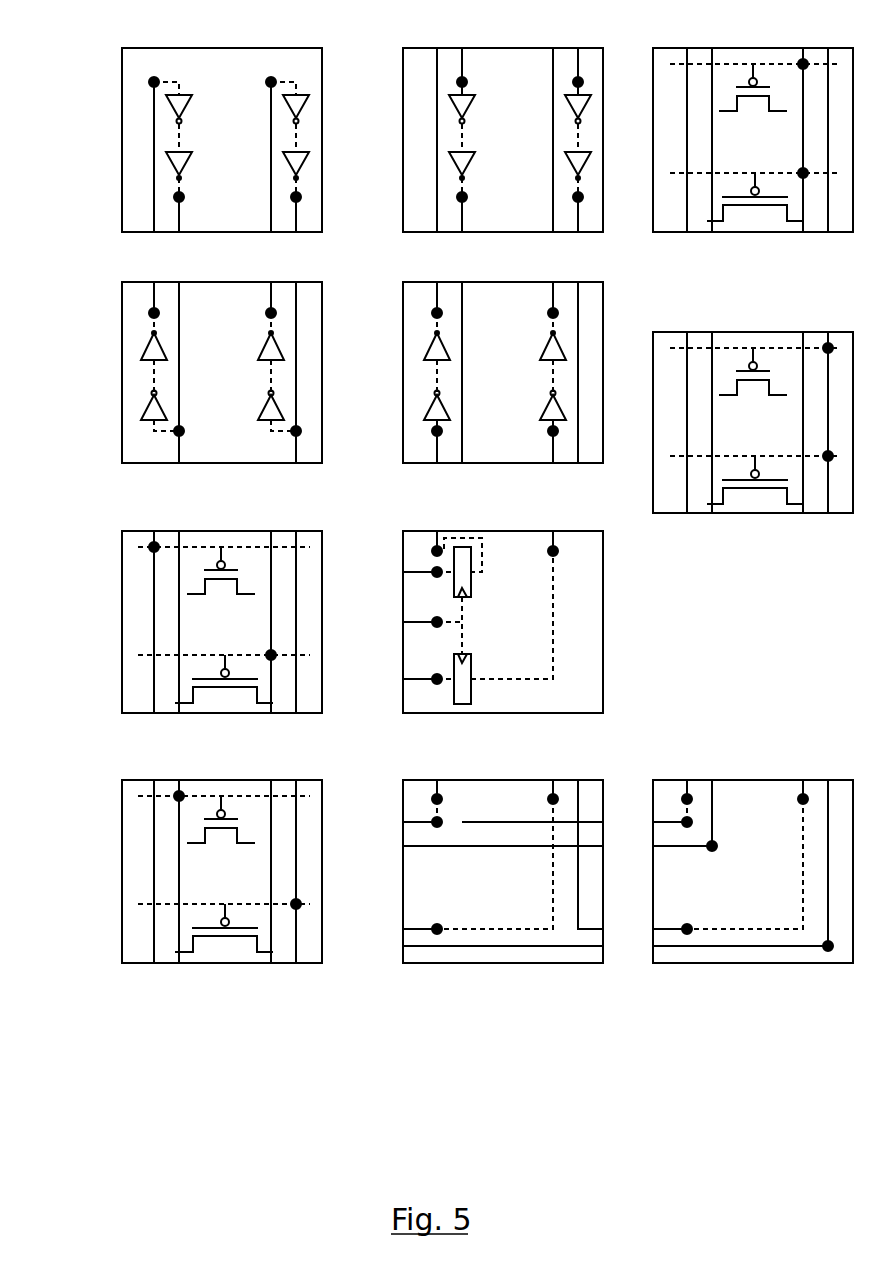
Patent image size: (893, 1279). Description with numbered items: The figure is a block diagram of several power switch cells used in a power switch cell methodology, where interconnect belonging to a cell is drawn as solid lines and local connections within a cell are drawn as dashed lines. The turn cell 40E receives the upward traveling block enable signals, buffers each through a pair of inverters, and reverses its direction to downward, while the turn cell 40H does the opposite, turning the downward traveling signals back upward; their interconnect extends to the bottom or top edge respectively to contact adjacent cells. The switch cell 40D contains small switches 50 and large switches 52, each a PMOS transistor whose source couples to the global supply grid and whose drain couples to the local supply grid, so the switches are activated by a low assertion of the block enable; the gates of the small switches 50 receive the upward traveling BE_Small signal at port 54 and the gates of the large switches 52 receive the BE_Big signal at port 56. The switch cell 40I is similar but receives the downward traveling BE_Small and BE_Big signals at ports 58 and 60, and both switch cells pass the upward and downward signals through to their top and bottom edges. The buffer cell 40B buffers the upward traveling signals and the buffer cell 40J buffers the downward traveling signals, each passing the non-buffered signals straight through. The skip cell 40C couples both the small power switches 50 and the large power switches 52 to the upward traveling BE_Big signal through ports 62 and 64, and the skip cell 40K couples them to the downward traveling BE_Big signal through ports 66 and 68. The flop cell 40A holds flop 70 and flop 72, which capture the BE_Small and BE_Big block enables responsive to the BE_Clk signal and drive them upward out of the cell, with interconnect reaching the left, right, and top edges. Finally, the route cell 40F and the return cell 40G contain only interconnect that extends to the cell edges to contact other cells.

The flop cell 40A is at (503, 613).
The buffer cell 40B is at (521, 402).
The skip cell 40C is at (755, 232).
The switch cell 40D is at (122, 620).
The turn cell 40E is at (242, 167).
The route cell 40F is at (514, 914).
The return cell 40G is at (765, 914).
The turn cell 40H is at (243, 402).
The switch cell 40I is at (122, 872).
The buffer cell 40J is at (520, 167).
The skip cell 40K is at (753, 513).
The small switch 50 is at (753, 80).
The large switch 52 is at (708, 222).
The port 54 is at (154, 547).
The port 56 is at (271, 655).
The port 58 is at (179, 796).
The port 60 is at (296, 904).
The port 62 is at (803, 64).
The port 64 is at (803, 173).
The port 66 is at (828, 348).
The port 68 is at (828, 456).
The flop 70 is at (462, 547).
The flop 72 is at (471, 680).